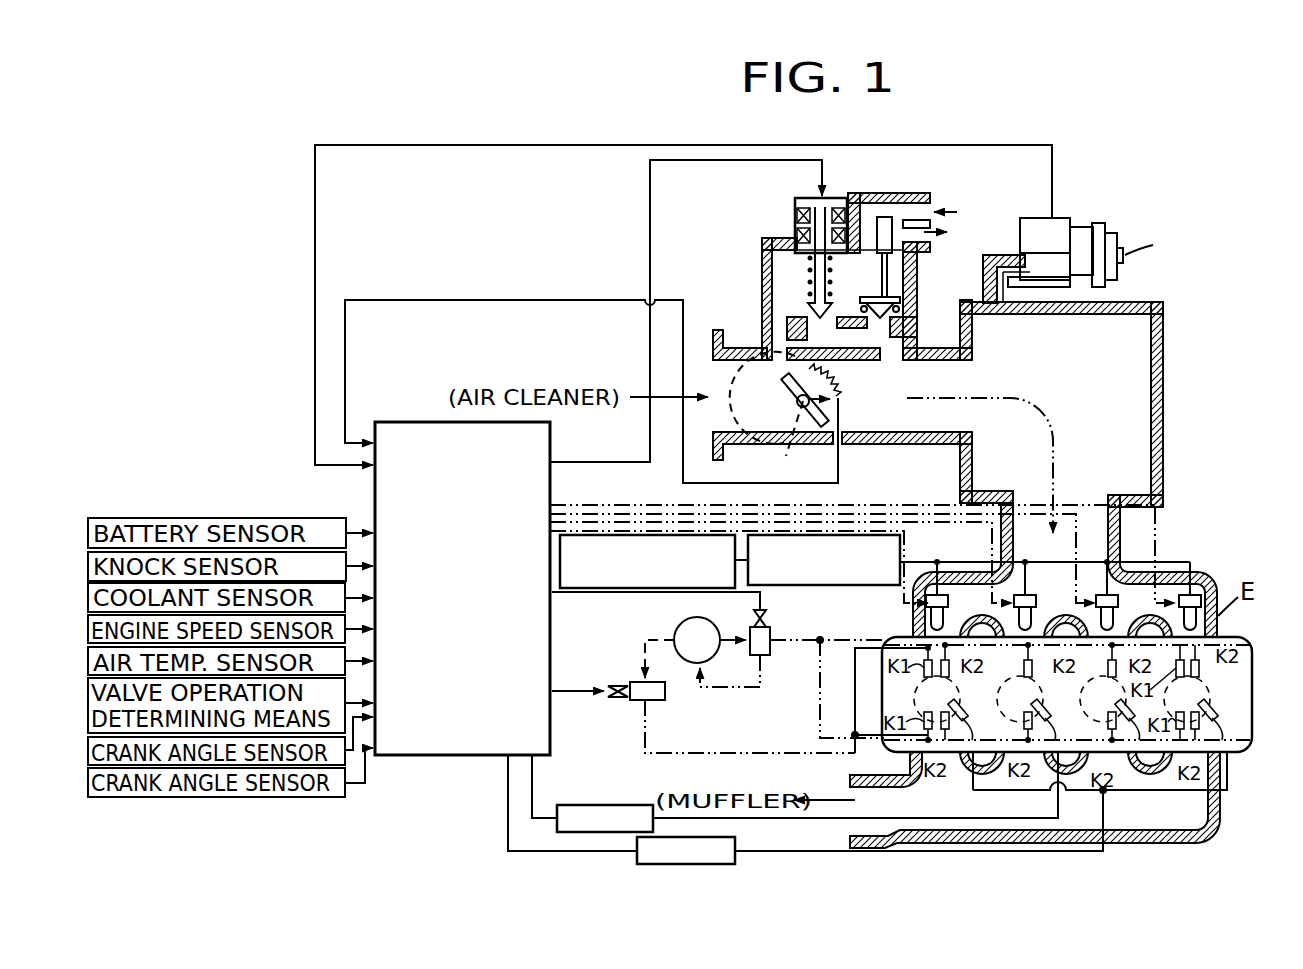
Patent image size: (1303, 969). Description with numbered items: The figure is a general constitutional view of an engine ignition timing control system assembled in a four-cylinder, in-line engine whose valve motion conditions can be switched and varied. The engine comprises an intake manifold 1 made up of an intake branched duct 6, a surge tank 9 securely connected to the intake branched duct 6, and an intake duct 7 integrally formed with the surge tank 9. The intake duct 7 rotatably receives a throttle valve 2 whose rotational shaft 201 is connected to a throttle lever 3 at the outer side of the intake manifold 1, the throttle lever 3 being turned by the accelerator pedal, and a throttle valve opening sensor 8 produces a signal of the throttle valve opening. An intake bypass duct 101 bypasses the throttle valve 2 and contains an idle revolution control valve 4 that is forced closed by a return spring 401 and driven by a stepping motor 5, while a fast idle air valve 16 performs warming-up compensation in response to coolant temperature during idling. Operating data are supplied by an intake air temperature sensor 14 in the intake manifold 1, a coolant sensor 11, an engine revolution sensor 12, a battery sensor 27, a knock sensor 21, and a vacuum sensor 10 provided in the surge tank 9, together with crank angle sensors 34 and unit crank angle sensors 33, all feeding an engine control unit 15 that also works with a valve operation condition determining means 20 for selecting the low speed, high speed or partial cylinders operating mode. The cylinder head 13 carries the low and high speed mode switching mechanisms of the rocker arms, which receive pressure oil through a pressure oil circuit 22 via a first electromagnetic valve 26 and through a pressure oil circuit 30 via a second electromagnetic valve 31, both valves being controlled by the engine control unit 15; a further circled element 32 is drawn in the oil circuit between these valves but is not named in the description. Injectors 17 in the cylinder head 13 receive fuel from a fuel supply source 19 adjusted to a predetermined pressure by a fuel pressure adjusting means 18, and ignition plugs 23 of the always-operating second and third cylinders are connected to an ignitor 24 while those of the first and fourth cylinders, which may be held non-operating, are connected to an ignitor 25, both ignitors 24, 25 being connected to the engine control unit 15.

The intake manifold 1 is at (899, 382).
The throttle valve 2 is at (782, 383).
The throttle lever 3 is at (778, 455).
The idle revolution control (ISC) valve 4 is at (830, 278).
The stepping motor 5 is at (797, 215).
The intake branched duct 6 is at (1215, 637).
The intake duct 7 is at (874, 444).
The throttle valve opening sensor 8 is at (838, 386).
The surge tank 9 is at (1163, 410).
The vacuum sensor 10 is at (1100, 220).
The coolant sensor 11 is at (88, 598).
The engine revolution sensor 12 is at (88, 629).
The cylinder head 13 is at (1253, 720).
The intake air temperature sensor 14 is at (88, 661).
The engine control unit 15 is at (452, 748).
The fast idle air valve 16 is at (882, 217).
The injectors 17 is at (930, 618).
The fuel pressure adjusting means 18 is at (806, 588).
The fuel supply source 19 is at (577, 570).
The valve operation condition determining means 20 is at (88, 690).
The knock sensor 21 is at (88, 566).
The pressure oil circuit 22 is at (752, 752).
The ignition plugs 23 is at (967, 712).
The ignitor 24 is at (583, 805).
The ignitor 25 is at (633, 853).
The first electromagnetic valve 26 is at (660, 698).
The battery sensor 27 is at (88, 533).
The pressure oil circuit 30 is at (840, 640).
The second electromagnetic valve 31 is at (770, 650).
The fuel pressure regulator 32 is at (717, 652).
The unit crank angle sensor 33 is at (88, 750).
The crank angle sensor 34 is at (88, 783).
The intake bypass duct 101 is at (790, 300).
The rotational shaft 201 is at (795, 403).
The return spring 401 is at (808, 268).